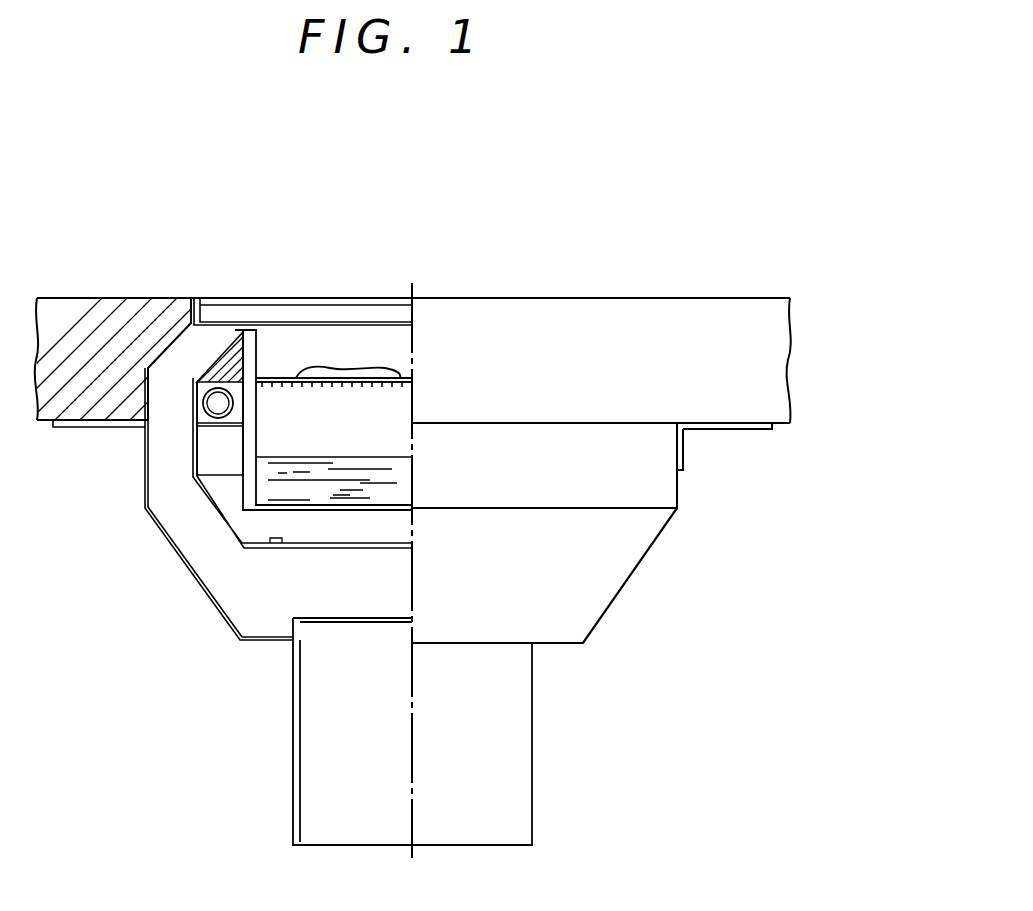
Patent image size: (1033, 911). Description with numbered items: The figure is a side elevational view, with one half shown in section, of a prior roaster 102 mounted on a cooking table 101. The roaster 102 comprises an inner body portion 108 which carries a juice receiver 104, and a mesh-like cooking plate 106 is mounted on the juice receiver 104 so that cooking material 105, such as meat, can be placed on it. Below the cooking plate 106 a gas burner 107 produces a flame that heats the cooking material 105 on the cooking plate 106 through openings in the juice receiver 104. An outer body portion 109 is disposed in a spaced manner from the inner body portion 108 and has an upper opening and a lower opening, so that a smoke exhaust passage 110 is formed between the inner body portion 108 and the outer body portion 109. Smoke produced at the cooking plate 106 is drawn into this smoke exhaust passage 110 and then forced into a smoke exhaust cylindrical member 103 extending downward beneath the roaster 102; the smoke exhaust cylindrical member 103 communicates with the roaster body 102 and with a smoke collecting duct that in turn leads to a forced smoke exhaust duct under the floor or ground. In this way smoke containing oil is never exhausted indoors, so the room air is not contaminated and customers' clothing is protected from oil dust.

The cooking table 101 is at (92, 312).
The roaster 102 is at (343, 286).
The smoke exhaust cylindrical member 103 is at (532, 723).
The juice receiver 104 is at (253, 510).
The cooking material 105 is at (380, 368).
The mesh-like cooking plate 106 is at (290, 378).
The gas burner 107 is at (213, 388).
The inner body portion 108 is at (203, 500).
The outer body portion 109 is at (245, 643).
The smoke exhaust passage 110 is at (160, 443).